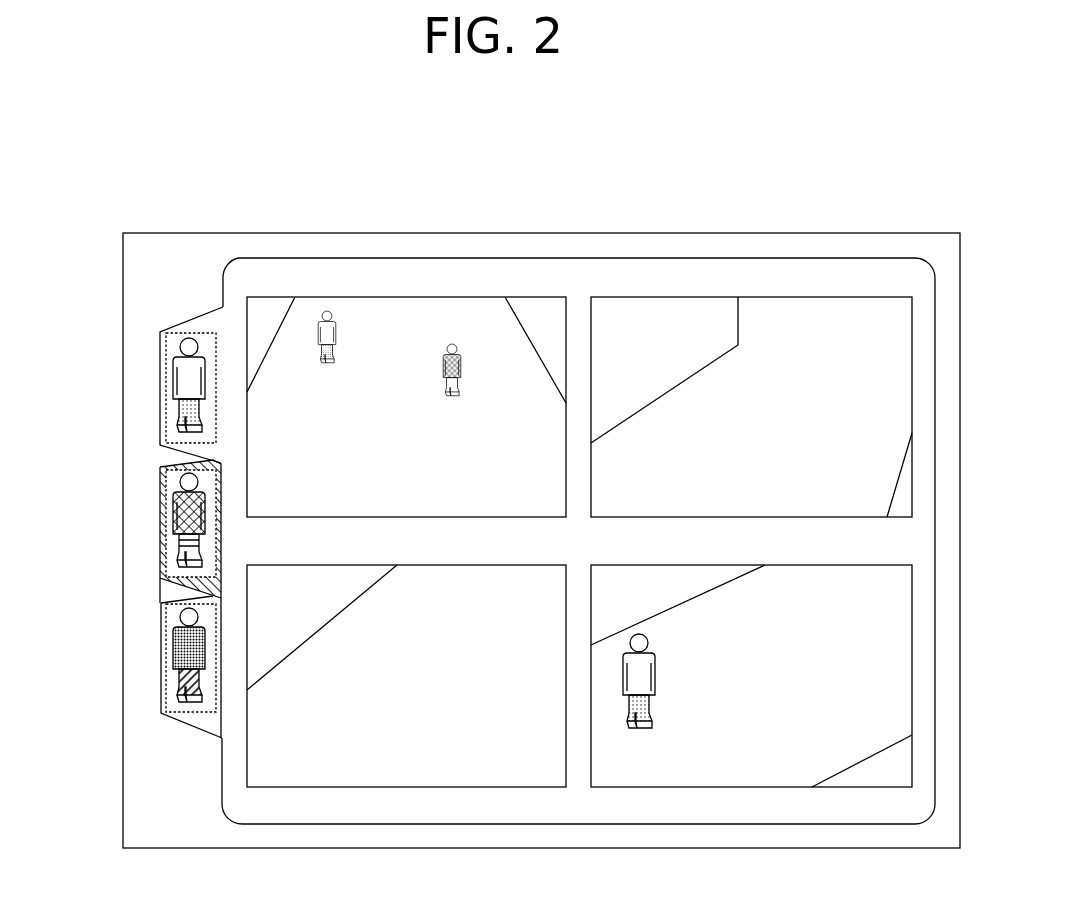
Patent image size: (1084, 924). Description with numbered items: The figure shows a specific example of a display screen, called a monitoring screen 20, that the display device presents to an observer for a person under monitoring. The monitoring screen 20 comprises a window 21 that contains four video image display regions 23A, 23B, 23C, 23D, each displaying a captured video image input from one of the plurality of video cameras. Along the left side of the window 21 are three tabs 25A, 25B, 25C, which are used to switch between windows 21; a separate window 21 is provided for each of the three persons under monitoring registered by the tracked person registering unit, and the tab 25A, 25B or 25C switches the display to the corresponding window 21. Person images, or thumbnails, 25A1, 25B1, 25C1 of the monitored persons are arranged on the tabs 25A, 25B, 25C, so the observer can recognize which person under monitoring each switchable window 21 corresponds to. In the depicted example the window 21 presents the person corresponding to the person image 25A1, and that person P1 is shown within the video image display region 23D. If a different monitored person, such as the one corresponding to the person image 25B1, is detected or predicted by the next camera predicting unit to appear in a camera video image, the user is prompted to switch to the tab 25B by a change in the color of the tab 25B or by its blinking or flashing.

The monitoring screen 20 is at (218, 233).
The window 21 is at (291, 258).
The video image display region 23A is at (402, 297).
The video image display region 23B is at (748, 297).
The video image display region 23C is at (408, 787).
The video image display region 23D is at (748, 787).
The tab 25A is at (160, 392).
The person image 25A1 is at (165, 362).
The tab 25B is at (160, 527).
The person image 25B1 is at (165, 497).
The tab 25C is at (161, 662).
The person image 25C1 is at (165, 631).
The person P1 is at (637, 735).